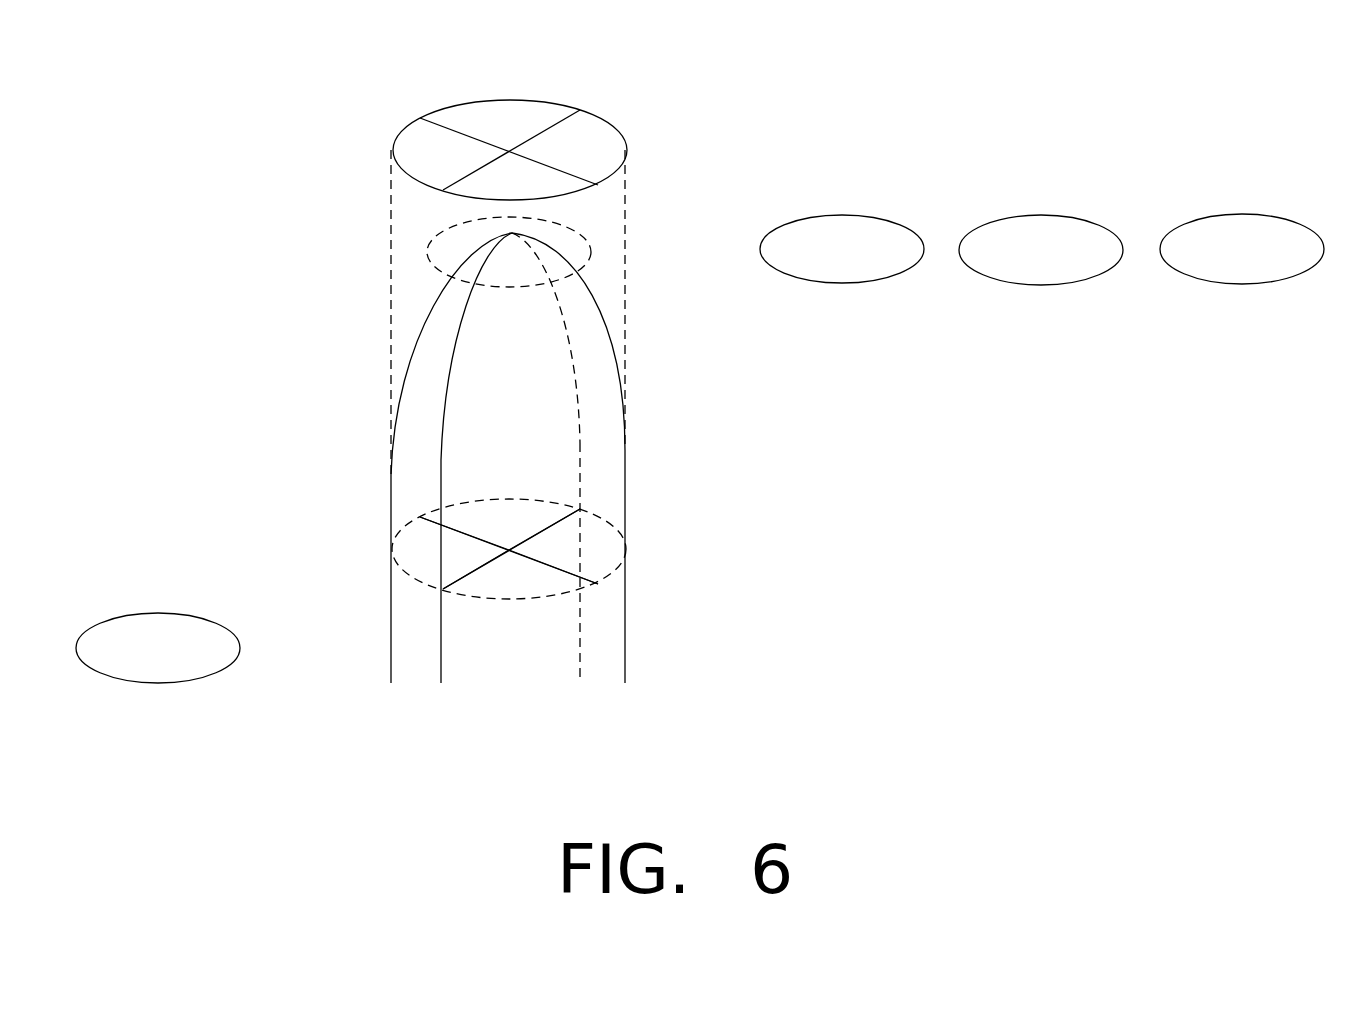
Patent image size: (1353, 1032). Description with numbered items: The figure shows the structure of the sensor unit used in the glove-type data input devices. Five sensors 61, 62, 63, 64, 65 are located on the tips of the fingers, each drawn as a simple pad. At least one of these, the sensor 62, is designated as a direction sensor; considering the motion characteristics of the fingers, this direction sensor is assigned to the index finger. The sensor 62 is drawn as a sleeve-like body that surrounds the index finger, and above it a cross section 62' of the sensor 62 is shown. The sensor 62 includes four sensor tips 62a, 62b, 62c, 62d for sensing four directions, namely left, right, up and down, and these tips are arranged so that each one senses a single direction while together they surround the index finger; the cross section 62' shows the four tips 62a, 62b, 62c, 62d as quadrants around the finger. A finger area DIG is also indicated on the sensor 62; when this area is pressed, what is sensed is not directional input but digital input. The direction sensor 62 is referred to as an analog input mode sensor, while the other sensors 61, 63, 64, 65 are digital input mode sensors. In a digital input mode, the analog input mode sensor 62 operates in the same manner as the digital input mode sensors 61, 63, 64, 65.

The sensor 61 is at (158, 683).
The sensor 62 is at (508, 466).
The cross section of the sensor 62' is at (510, 118).
The sensor tip 62a is at (405, 560).
The sensor tip 62b is at (540, 583).
The sensor tip 62c is at (600, 546).
The sensor tip 62d is at (468, 517).
The finger area DIG is at (592, 246).
The sensor 63 is at (842, 283).
The sensor 64 is at (1041, 285).
The sensor 65 is at (1242, 284).